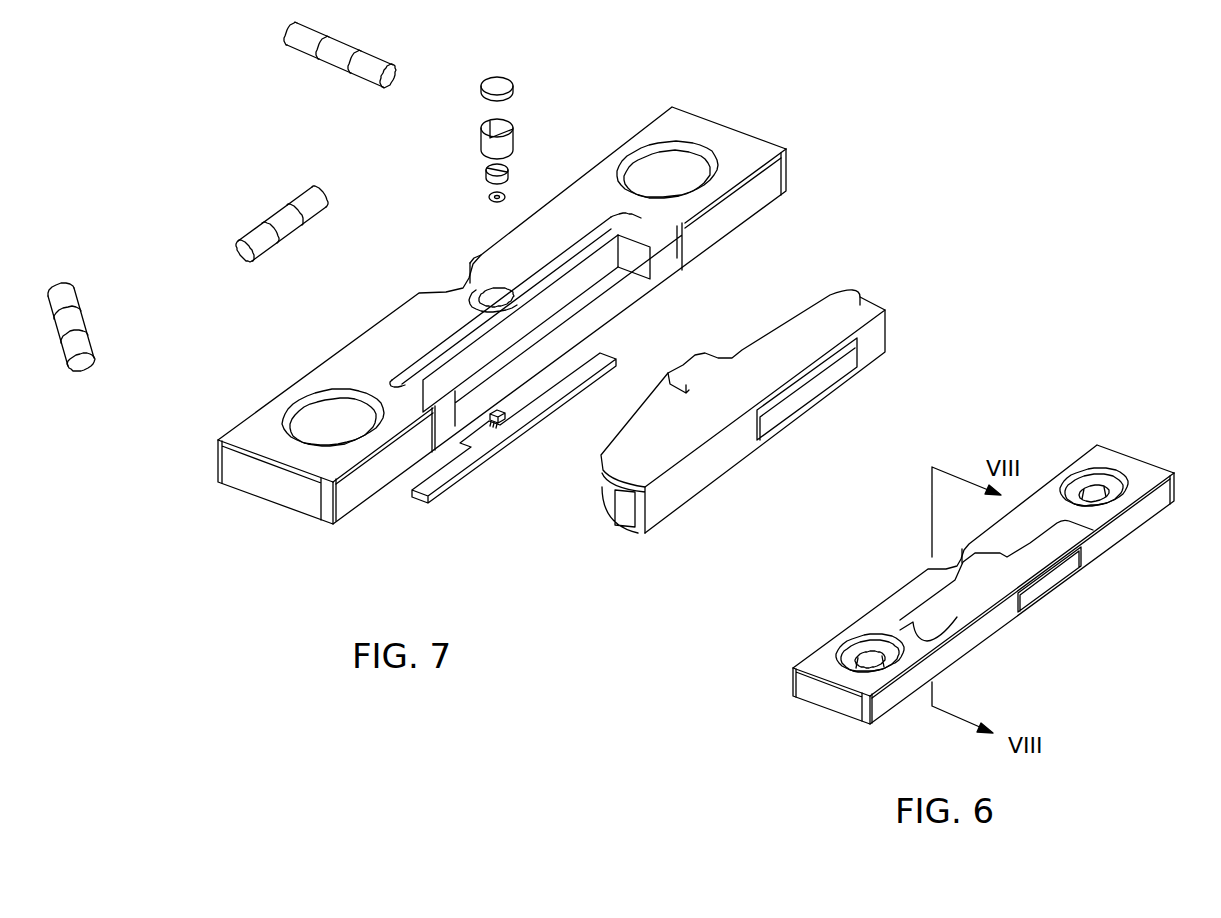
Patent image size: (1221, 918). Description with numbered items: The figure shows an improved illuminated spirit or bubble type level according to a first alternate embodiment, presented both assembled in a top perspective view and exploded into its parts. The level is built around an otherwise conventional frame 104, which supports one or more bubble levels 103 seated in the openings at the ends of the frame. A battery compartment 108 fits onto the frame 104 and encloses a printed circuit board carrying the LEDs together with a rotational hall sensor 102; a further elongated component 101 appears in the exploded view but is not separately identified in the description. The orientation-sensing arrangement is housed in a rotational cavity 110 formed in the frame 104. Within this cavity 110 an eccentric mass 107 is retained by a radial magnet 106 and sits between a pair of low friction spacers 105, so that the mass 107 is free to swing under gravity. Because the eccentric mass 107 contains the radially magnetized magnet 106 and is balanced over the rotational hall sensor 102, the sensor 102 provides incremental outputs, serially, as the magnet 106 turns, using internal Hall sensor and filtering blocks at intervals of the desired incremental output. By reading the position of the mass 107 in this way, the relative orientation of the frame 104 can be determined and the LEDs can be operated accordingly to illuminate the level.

In FIG. 7, the circuit board 101 is at (468, 468).
In FIG. 7, the rotational hall sensor 102 is at (506, 410).
In FIG. 7, the bubble levels 103 is at (293, 42).
In FIG. 6, the bubble levels 103 is at (866, 647).
In FIG. 7, the frame 104 is at (245, 481).
In FIG. 7, the low friction spacers 105 is at (511, 195).
In FIG. 7, the radial magnet 106 is at (487, 173).
In FIG. 7, the eccentric mass 107 is at (481, 143).
In FIG. 7, the battery compartment 108 is at (878, 343).
In FIG. 7, the rotational cavity 110 is at (500, 298).